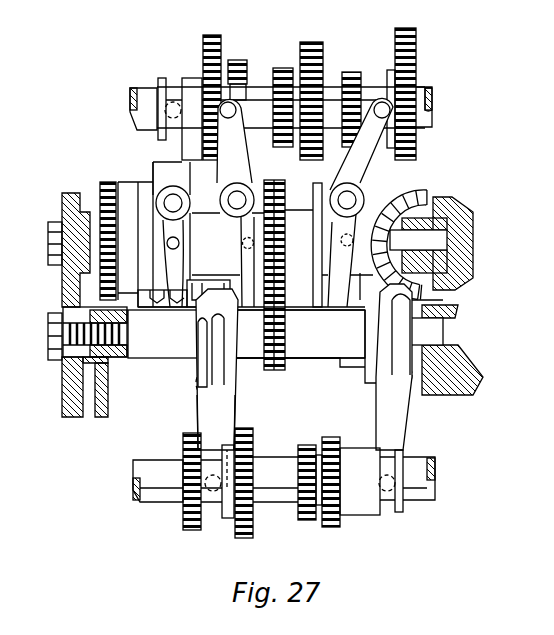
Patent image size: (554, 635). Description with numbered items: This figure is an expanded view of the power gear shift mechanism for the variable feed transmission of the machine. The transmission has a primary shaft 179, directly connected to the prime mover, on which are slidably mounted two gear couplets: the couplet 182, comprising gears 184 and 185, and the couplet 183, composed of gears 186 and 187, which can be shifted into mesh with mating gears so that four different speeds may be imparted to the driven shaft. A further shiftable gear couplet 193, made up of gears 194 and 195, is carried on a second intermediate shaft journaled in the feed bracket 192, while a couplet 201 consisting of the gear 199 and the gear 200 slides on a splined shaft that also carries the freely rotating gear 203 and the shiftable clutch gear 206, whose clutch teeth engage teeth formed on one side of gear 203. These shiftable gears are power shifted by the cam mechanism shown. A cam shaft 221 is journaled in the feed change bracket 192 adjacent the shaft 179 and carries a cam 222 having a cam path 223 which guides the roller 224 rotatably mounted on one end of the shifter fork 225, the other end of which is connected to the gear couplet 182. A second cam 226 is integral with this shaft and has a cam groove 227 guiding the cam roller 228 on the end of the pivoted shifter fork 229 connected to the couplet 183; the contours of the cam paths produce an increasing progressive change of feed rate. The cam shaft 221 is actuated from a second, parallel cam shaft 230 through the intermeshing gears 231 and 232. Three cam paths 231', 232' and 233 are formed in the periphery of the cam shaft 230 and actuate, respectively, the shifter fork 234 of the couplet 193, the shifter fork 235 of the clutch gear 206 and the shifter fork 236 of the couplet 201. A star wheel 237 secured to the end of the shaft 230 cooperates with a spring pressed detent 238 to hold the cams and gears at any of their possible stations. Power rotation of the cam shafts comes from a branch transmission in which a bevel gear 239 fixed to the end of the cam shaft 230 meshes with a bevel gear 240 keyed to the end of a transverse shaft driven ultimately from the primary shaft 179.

The primary shaft 179 is at (150, 498).
The gear couplet 182 is at (227, 518).
The gear couplet 183 is at (368, 510).
The gear 184 is at (183, 527).
The gear 185 is at (247, 537).
The gear 186 is at (300, 520).
The gear 187 is at (332, 523).
The feed bracket 192 is at (63, 388).
The gear couplet 193 is at (182, 78).
The gear 194 is at (205, 37).
The gear 195 is at (238, 62).
The gear 199 is at (350, 72).
The gear 200 is at (415, 33).
The gear couplet 201 is at (392, 72).
The gear 203 is at (315, 42).
The clutch gear 206 is at (280, 68).
The cam shaft 221 is at (158, 355).
The cam 222 is at (187, 387).
The cam path 223 is at (233, 363).
The roller 224 is at (205, 327).
The shifter fork 225 is at (223, 418).
The second cam 226 is at (370, 365).
The cam groove 227 is at (412, 300).
The cam roller 228 is at (420, 298).
The shifter fork 229 is at (400, 433).
The cam shaft 230 is at (120, 200).
The gear 231 is at (293, 288).
The cam path 231' is at (196, 263).
The gear 232 is at (271, 237).
The cam path 232' is at (222, 262).
The cam path 233 is at (333, 267).
The shifter fork 234 is at (160, 155).
The shifter fork 235 is at (247, 157).
The shifter fork 236 is at (393, 157).
The star wheel 237 is at (100, 188).
The spring pressed detent 238 is at (107, 423).
The bevel gear 239 is at (373, 183).
The bevel gear 240 is at (437, 195).